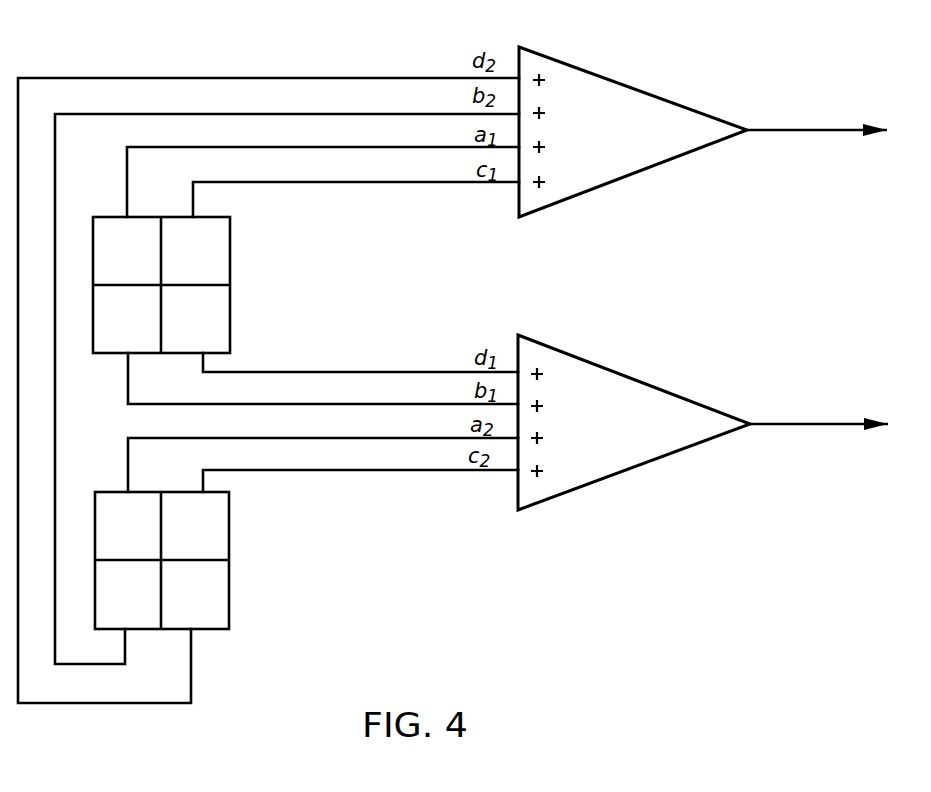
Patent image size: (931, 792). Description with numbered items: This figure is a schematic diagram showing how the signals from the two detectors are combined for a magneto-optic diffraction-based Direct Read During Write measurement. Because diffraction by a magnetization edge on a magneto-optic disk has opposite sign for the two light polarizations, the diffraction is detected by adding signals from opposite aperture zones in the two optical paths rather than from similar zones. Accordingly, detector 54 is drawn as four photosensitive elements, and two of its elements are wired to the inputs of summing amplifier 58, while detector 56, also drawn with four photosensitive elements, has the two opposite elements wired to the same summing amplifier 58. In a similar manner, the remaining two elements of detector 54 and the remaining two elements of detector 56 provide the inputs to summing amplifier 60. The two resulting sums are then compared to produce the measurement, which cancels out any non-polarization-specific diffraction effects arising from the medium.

The detector 54 is at (266, 245).
The detector 56 is at (268, 530).
The summing amplifier 58 is at (639, 89).
The summing amplifier 60 is at (609, 369).